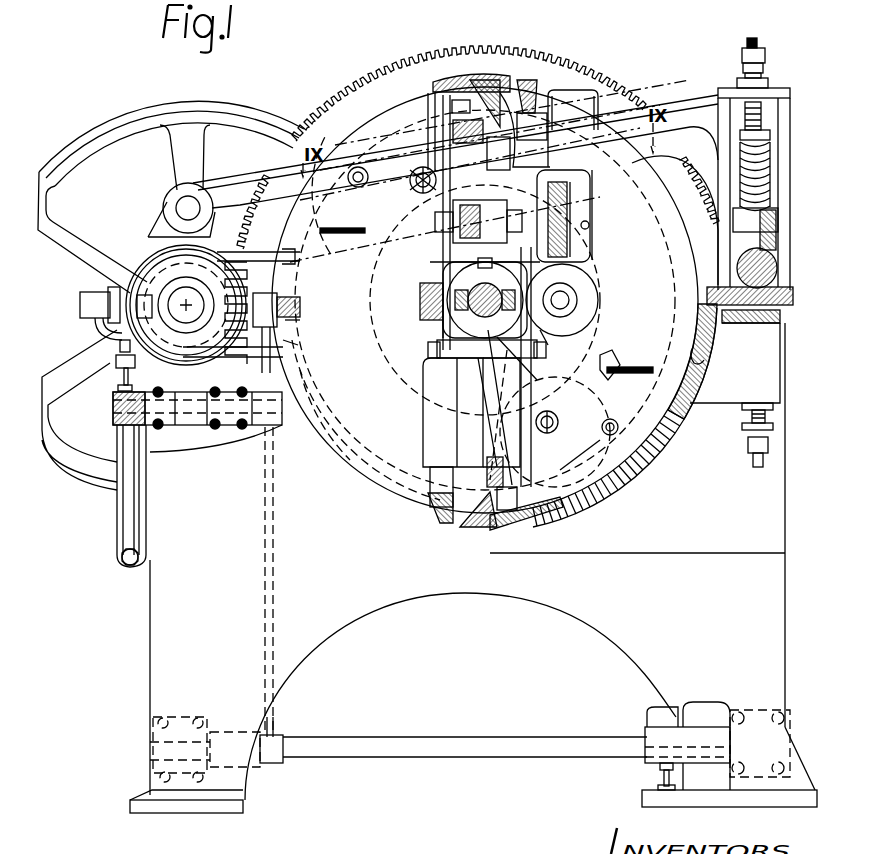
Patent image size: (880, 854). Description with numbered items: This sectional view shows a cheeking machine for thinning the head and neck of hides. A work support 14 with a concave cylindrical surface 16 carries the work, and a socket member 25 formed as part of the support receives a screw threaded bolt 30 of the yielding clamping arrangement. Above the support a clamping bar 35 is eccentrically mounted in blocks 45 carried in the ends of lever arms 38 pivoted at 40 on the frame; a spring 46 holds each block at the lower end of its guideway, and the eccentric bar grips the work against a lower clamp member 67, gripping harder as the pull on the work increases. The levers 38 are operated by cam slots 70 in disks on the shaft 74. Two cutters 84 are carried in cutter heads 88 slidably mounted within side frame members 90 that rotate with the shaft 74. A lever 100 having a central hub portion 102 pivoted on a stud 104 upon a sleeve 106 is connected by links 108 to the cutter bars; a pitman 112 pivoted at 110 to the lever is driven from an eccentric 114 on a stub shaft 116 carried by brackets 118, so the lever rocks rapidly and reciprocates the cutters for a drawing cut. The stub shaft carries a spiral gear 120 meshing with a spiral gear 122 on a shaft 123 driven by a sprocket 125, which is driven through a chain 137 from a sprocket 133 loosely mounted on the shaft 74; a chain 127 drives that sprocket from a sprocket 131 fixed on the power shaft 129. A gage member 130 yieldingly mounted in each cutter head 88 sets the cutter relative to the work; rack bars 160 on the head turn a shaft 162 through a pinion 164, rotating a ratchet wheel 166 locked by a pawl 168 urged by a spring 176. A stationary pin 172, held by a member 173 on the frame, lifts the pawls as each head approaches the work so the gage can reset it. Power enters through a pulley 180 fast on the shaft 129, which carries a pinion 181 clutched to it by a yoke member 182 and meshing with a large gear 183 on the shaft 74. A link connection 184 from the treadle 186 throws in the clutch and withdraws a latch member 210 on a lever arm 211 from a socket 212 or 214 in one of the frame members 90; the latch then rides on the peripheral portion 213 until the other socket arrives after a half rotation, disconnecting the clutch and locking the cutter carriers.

The work support 14 is at (700, 388).
The concave cylindrical surface 16 is at (702, 352).
The socket member 25 is at (778, 383).
The bolt 30 is at (757, 468).
The clamping bar 35 is at (743, 258).
The lever arms 38 is at (710, 100).
The pivot 40 is at (183, 209).
The blocks 45 is at (743, 227).
The spring 46 is at (767, 149).
The lower clamp member 67 is at (783, 307).
The cam slots 70 is at (407, 380).
The shaft 74 is at (440, 325).
The cutter 84 is at (510, 77).
The cutter head 88 is at (462, 70).
The side frame members 90 is at (417, 497).
The lever 100 is at (448, 142).
The central hub portion 102 is at (453, 357).
The stud 104 is at (425, 313).
The sleeve 106 is at (442, 330).
The links 108 is at (452, 75).
The pivot 110 is at (437, 228).
The pitman 112 is at (440, 262).
The eccentric 114 is at (502, 153).
The stub shaft 116 is at (572, 238).
The brackets 118 is at (585, 190).
The spiral gear 120 is at (590, 222).
The spiral gear 122 is at (597, 273).
The shaft 123 is at (593, 297).
The sprocket 125 is at (560, 341).
The chain 127 is at (265, 258).
The power shaft 129 is at (185, 298).
The gage member 130 is at (547, 87).
The sprocket 131 is at (197, 408).
The sprocket 133 is at (523, 407).
The chain 137 is at (420, 302).
The rack bars 160 is at (430, 165).
The shaft 162 is at (420, 173).
The pinion 164 is at (417, 173).
The ratchet wheel 166 is at (610, 447).
The locking pawl 168 is at (618, 428).
The pin 172 is at (577, 110).
The member 173 is at (549, 120).
The spring 176 is at (620, 352).
The pulley 180 is at (217, 107).
The pinion 181 is at (240, 298).
The yoke member 182 is at (145, 453).
The large gear 183 is at (327, 100).
The link connection 184 is at (272, 717).
The treadle 186 is at (700, 762).
The latch member 210 is at (292, 340).
The lever arm 211 is at (300, 343).
The socket 212 is at (340, 455).
The peripheral portion 213 is at (383, 477).
The socket 214 is at (642, 107).